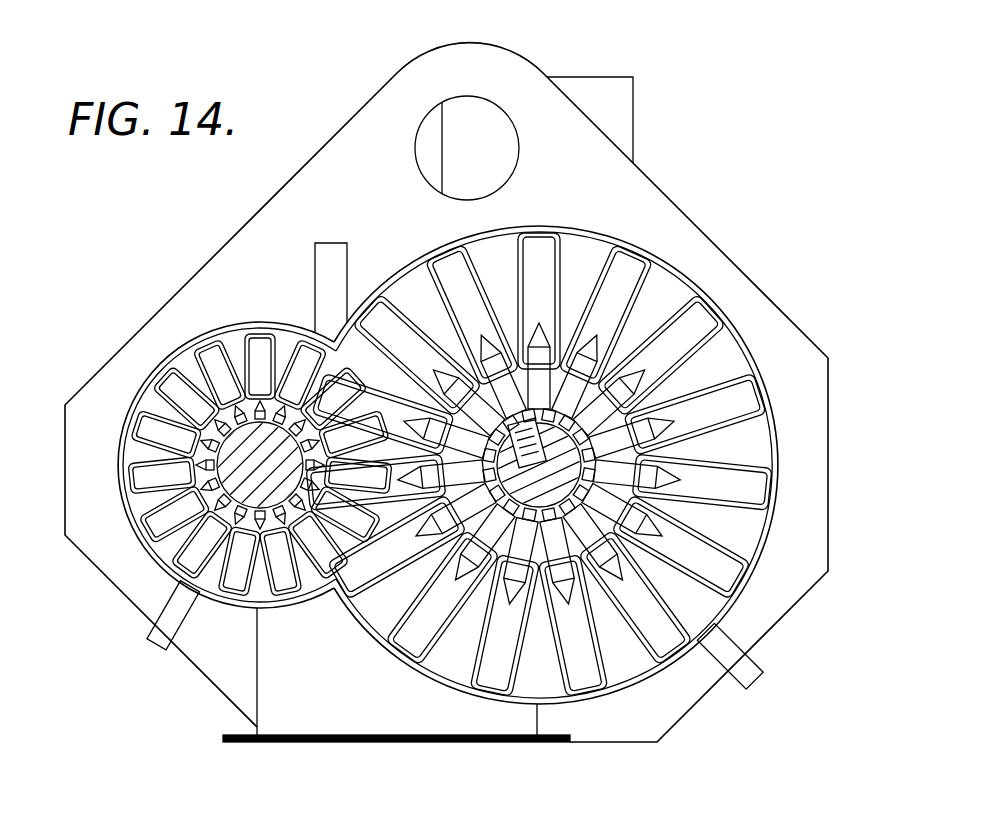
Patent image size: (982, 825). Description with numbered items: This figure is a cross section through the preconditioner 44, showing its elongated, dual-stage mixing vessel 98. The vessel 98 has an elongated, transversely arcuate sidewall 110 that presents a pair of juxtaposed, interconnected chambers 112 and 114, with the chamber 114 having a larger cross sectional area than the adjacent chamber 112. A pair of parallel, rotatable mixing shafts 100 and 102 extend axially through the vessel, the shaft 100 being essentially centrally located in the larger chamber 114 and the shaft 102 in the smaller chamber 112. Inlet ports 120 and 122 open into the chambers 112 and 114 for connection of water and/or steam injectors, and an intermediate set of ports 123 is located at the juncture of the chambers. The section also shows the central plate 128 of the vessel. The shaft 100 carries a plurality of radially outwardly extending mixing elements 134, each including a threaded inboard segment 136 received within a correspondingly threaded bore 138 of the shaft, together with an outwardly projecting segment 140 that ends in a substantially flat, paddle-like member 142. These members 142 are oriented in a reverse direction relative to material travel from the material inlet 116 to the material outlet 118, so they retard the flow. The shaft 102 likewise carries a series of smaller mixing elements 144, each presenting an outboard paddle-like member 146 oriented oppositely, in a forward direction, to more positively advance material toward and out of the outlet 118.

The preconditioner 44 is at (712, 143).
The mixing vessel 98 is at (680, 267).
The mixing shaft 100 is at (398, 482).
The mixing shaft 102 is at (240, 457).
The sidewall 110 is at (573, 228).
The chamber 112 is at (183, 360).
The chamber 114 is at (452, 652).
The material inlet 116 is at (590, 88).
The material outlet 118 is at (340, 713).
The inlet ports 120 is at (148, 636).
The inlet ports 122 is at (747, 677).
The intermediate set of ports 123 is at (330, 243).
The central plate 128 is at (418, 85).
The mixing elements 134 is at (447, 248).
The threaded inboard segment 136 is at (607, 417).
The threaded bore 138 is at (672, 483).
The outwardly projecting segment 140 is at (500, 360).
The paddle-like member 142 is at (433, 280).
The mixing elements 144 is at (237, 342).
The paddle-like member 146 is at (264, 342).